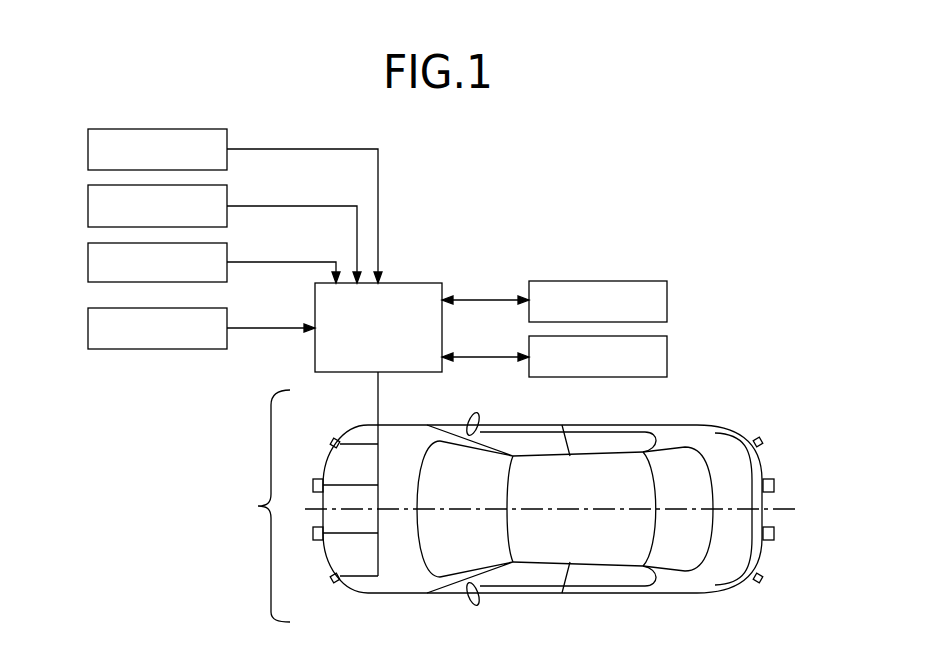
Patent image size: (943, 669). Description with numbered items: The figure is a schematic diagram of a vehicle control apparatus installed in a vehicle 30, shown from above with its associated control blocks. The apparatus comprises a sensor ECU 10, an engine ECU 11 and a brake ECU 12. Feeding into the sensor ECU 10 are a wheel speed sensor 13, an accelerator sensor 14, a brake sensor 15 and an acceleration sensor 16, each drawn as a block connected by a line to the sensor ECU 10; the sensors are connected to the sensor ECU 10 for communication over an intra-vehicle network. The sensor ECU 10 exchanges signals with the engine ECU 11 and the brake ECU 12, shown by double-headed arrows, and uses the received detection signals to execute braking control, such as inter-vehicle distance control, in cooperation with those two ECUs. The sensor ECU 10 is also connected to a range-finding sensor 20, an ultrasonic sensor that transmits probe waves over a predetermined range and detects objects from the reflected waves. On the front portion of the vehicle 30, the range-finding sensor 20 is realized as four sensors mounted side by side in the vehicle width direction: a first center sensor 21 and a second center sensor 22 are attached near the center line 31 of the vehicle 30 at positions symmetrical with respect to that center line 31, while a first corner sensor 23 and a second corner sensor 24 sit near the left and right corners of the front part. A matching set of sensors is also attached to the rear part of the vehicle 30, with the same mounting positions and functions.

The sensor ECU 10 is at (427, 283).
The engine ECU 11 is at (668, 300).
The brake ECU 12 is at (668, 357).
The wheel speed sensor 13 is at (88, 150).
The accelerator sensor 14 is at (88, 206).
The brake sensor 15 is at (88, 262).
The acceleration sensor 16 is at (88, 328).
The range-finding sensor 20 is at (259, 506).
The first center sensor 21 is at (313, 478).
The second center sensor 22 is at (313, 541).
The first corner sensor 23 is at (335, 436).
The second corner sensor 24 is at (335, 584).
The vehicle 30 is at (590, 425).
The center line 31 is at (568, 511).